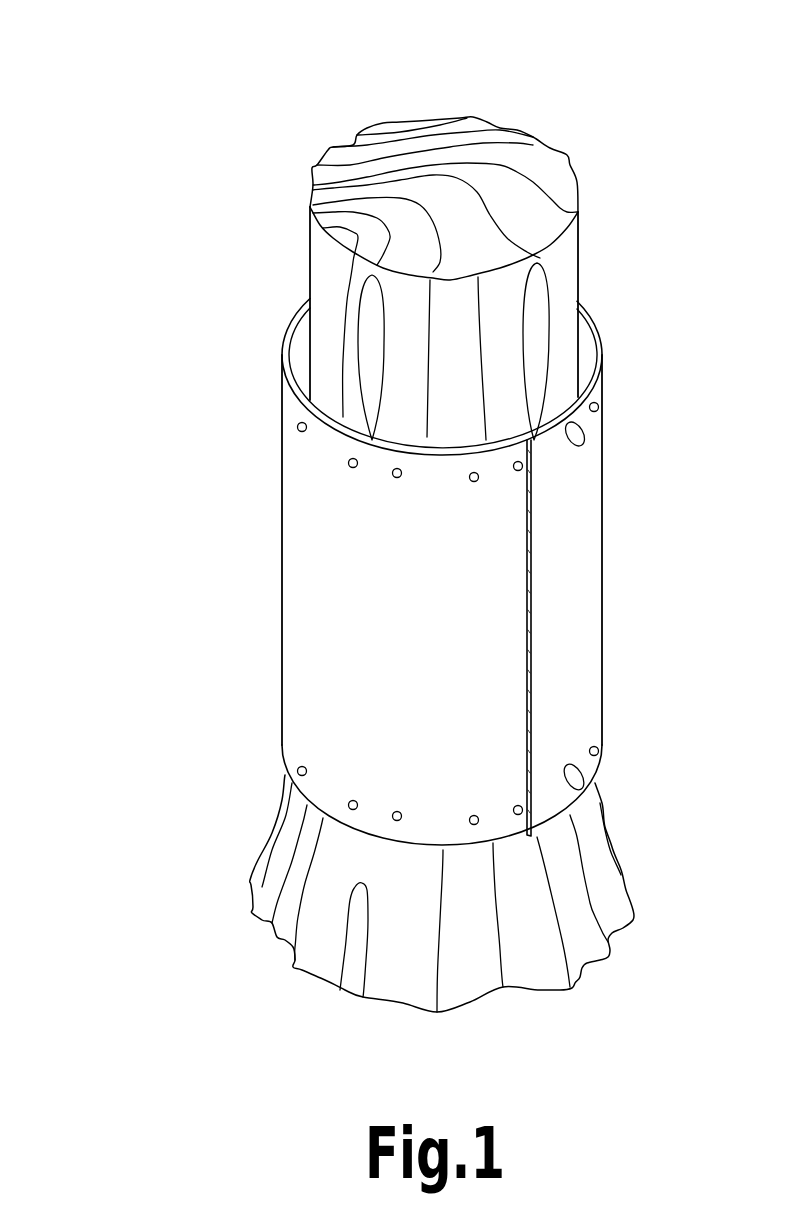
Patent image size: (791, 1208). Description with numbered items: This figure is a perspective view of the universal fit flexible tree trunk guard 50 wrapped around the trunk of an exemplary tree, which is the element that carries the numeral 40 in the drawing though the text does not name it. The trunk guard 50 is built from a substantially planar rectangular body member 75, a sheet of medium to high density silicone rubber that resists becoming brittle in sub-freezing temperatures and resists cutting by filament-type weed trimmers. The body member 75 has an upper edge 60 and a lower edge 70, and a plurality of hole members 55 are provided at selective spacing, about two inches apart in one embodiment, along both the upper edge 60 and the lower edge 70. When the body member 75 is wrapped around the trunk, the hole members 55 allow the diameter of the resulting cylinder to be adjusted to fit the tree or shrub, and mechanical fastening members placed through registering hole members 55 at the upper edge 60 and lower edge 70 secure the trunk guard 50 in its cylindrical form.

The wooden post 40 is at (495, 192).
The universal fit flexible tree trunk guard 50 is at (312, 592).
The hole members 55 is at (475, 472).
The upper edge 60 is at (284, 343).
The lower edge 70 is at (290, 778).
The substantially planar rectangular body member 75 is at (455, 685).